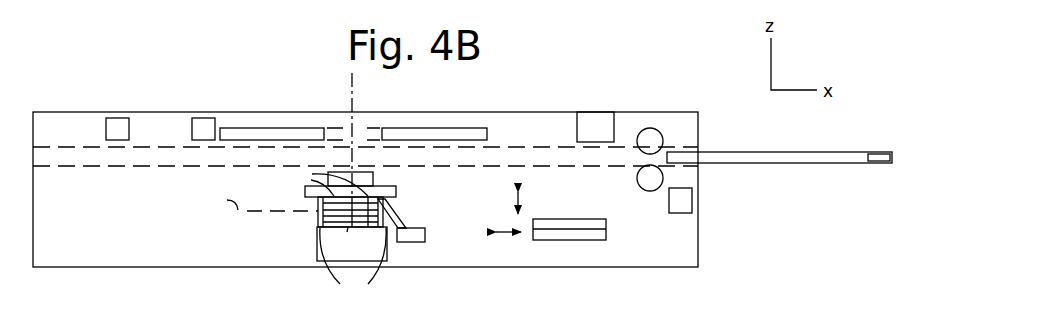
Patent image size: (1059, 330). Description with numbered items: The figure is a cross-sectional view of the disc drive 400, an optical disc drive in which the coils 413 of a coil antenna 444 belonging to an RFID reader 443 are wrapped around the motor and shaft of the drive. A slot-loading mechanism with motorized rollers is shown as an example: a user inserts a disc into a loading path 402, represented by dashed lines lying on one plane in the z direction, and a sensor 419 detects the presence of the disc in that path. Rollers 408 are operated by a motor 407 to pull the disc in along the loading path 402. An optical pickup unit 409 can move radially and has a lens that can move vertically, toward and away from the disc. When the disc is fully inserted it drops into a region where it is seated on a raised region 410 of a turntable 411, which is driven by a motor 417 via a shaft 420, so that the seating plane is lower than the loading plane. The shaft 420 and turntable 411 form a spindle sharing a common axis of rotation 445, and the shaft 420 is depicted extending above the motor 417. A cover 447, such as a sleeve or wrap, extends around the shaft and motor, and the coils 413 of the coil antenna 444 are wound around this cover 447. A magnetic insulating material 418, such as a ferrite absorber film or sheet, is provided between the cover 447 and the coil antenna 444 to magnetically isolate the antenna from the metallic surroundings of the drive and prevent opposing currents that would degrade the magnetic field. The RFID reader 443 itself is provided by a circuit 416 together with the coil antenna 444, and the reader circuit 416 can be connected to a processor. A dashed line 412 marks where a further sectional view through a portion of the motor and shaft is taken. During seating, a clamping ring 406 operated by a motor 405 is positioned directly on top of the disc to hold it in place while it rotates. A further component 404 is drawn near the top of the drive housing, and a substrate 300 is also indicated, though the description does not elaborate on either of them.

The substrate 300 is at (780, 152).
The disc drive 400 is at (186, 68).
The loading path 402 is at (698, 145).
The sensor 404 is at (118, 118).
The motor 405 is at (207, 118).
The clamping ring 406 is at (302, 128).
The motor 407 is at (597, 112).
The rollers 408 is at (650, 128).
The optical pickup unit 409 is at (551, 216).
The raised region 410 is at (375, 172).
The turntable 411 is at (397, 190).
The dashed line 412 is at (254, 198).
The coils 413 is at (318, 198).
The circuit 416 is at (425, 235).
The motor 417 is at (317, 253).
The magnetic insulating material 418 is at (353, 266).
The sensor 419 is at (684, 213).
The shaft 420 is at (352, 244).
The RFID reader 443 is at (405, 272).
The coil antenna 444 is at (310, 218).
The axis of rotation 445 is at (350, 91).
The cover 447 is at (320, 180).